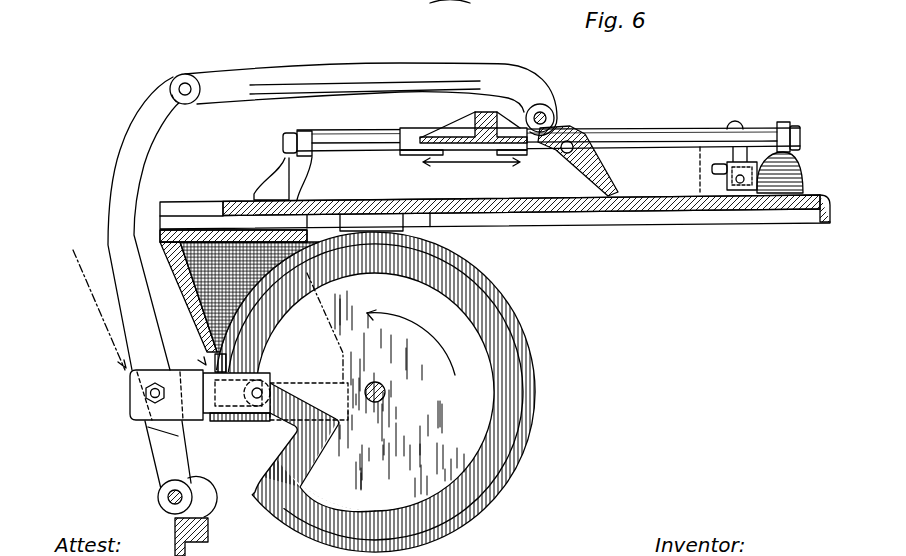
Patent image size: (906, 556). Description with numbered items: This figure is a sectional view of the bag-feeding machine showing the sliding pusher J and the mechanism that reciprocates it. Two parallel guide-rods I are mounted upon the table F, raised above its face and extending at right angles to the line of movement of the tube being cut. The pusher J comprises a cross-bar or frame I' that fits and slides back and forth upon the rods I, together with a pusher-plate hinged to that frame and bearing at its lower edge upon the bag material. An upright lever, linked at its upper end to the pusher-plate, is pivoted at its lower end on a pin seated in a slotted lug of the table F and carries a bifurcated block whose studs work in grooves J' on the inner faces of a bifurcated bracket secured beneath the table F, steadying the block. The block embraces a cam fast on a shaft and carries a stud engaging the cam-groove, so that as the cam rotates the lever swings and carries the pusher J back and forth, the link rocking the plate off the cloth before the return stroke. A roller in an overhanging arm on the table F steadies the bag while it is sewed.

The table F is at (495, 222).
The guide-rods I is at (527, 156).
The cross-bar or frame I' is at (463, 135).
The sliding pusher J is at (548, 118).
The grooves J' is at (309, 346).